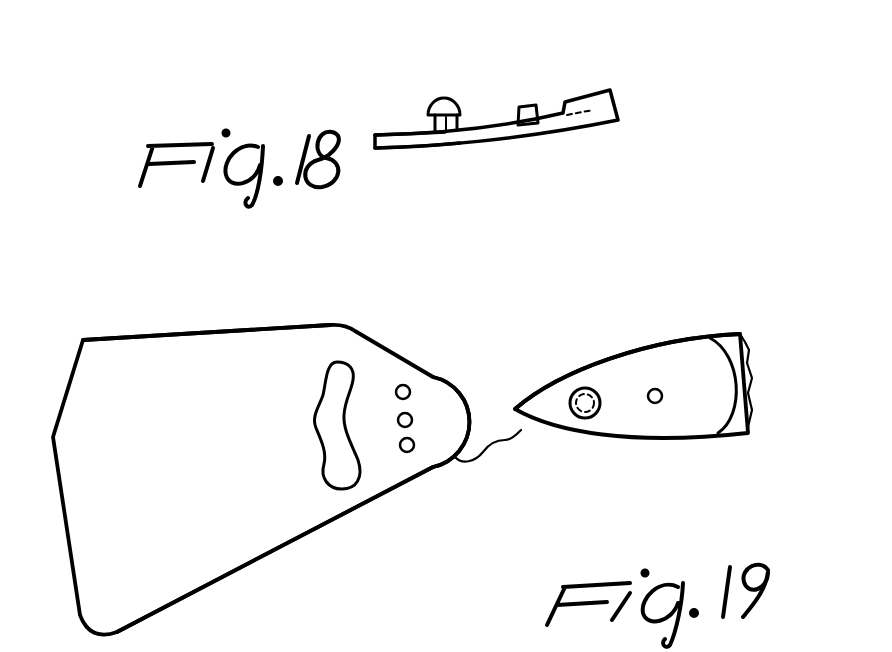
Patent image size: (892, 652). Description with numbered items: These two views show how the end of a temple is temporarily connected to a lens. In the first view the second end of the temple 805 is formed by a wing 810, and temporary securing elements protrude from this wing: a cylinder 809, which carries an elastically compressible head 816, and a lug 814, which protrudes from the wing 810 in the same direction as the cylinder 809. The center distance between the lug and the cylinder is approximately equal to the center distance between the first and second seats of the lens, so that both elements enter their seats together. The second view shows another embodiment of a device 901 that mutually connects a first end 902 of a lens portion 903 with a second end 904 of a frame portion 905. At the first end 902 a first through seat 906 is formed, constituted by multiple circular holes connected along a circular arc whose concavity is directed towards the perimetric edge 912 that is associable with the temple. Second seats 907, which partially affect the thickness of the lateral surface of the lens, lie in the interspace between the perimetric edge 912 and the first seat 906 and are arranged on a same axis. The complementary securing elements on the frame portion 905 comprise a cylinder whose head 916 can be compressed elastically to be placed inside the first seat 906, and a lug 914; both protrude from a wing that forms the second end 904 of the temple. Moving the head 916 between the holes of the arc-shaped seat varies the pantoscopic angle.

In FIG. 18, the temple 805 is at (613, 98).
In FIG. 18, the cylinder 809 is at (444, 148).
In FIG. 18, the wing 810 is at (400, 133).
In FIG. 18, the lug 814 is at (530, 105).
In FIG. 18, the elastically compressible head 816 is at (445, 100).
In FIG. 19, the device 901 is at (213, 322).
In FIG. 19, the first end 902 is at (348, 522).
In FIG. 19, the lens portion 903 is at (125, 363).
In FIG. 19, the second end 904 is at (578, 455).
In FIG. 19, the frame portion 905 is at (750, 413).
In FIG. 19, the first through seat 906 is at (316, 428).
In FIG. 19, the second seats 907 is at (405, 385).
In FIG. 19, the perimetric edge 912 is at (450, 390).
In FIG. 19, the lug 914 is at (657, 389).
In FIG. 19, the head 916 is at (600, 388).